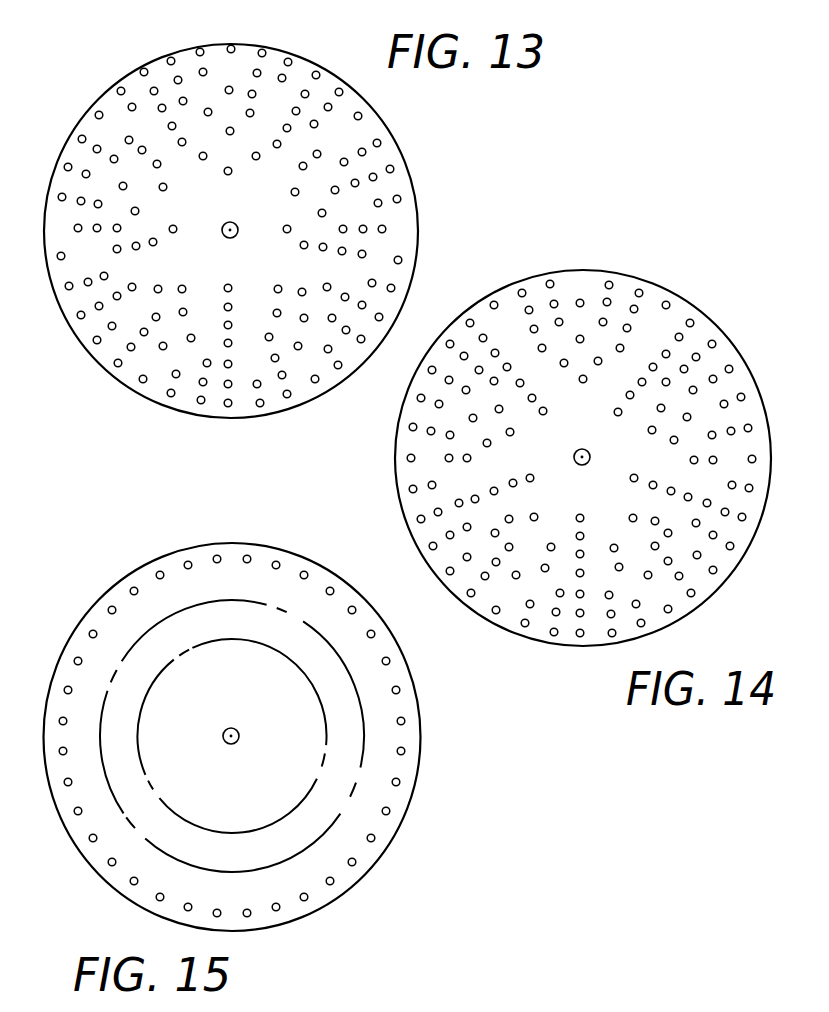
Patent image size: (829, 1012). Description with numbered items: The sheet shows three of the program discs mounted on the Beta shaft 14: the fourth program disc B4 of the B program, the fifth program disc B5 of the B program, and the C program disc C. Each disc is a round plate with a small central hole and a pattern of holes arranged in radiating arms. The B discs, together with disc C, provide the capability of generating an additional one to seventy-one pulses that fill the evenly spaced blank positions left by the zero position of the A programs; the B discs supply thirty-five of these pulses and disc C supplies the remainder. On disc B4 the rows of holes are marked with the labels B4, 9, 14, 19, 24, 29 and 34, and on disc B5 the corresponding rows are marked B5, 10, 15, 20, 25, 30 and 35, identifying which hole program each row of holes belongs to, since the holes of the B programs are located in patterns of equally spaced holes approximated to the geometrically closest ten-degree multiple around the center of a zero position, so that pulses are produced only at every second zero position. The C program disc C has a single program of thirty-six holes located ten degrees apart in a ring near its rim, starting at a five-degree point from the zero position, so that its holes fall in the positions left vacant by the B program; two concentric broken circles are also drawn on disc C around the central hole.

In FIG. 13, the fourth program disc of the B program B4 is at (260, 231).
In FIG. 13, the hole position 9 of disc B4 9 is at (234, 307).
In FIG. 13, the Beta shaft 14 is at (238, 325).
In FIG. 13, the hole position 19 of disc B4 19 is at (238, 343).
In FIG. 13, the hole position 24 of disc B4 24 is at (238, 364).
In FIG. 13, the hole position 29 of disc B4 29 is at (238, 384).
In FIG. 13, the hole position 34 of disc B4 34 is at (238, 403).
In FIG. 14, the fifth program disc of the B program B5 is at (583, 458).
In FIG. 14, the hole position 10 of disc B5 10 is at (590, 536).
In FIG. 14, the hole position 15 of disc B5 15 is at (590, 554).
In FIG. 14, the hole position 20 of disc B5 20 is at (590, 573).
In FIG. 14, the hole position 25 of disc B5 25 is at (590, 594).
In FIG. 14, the hole position 30 of disc B5 30 is at (590, 613).
In FIG. 14, the hole position 35 of disc B5 35 is at (590, 633).
In FIG. 15, the C program disc C is at (232, 737).